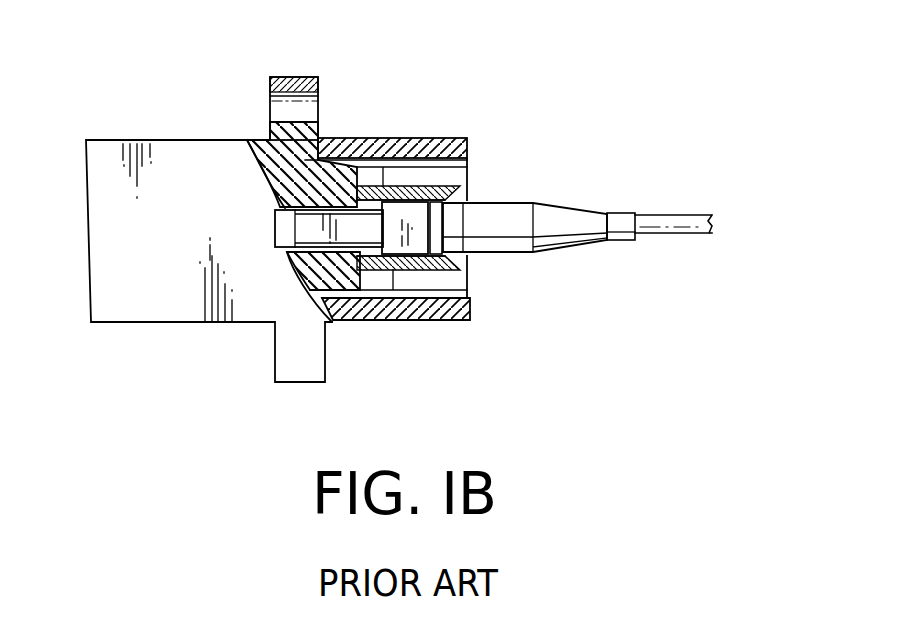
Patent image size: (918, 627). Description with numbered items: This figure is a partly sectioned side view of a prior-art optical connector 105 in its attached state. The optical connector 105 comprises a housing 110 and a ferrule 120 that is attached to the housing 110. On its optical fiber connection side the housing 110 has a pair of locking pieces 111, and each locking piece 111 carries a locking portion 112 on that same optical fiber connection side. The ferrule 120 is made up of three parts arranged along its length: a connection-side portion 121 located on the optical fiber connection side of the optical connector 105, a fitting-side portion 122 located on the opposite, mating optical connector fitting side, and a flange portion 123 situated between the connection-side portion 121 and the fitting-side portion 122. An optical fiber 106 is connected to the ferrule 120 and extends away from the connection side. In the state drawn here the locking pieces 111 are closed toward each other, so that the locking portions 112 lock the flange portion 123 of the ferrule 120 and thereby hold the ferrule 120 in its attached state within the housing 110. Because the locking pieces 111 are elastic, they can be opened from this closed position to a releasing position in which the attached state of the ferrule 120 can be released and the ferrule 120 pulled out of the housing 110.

The optical connector 105 is at (325, 77).
The optical fiber 106 is at (657, 238).
The housing 110 is at (182, 134).
The locking piece 111 is at (385, 183).
The locking portion 112 is at (448, 192).
The ferrule 120 is at (577, 250).
The connection-side portion 121 is at (498, 236).
The fitting-side portion 122 is at (407, 220).
The flange portion 123 is at (439, 221).